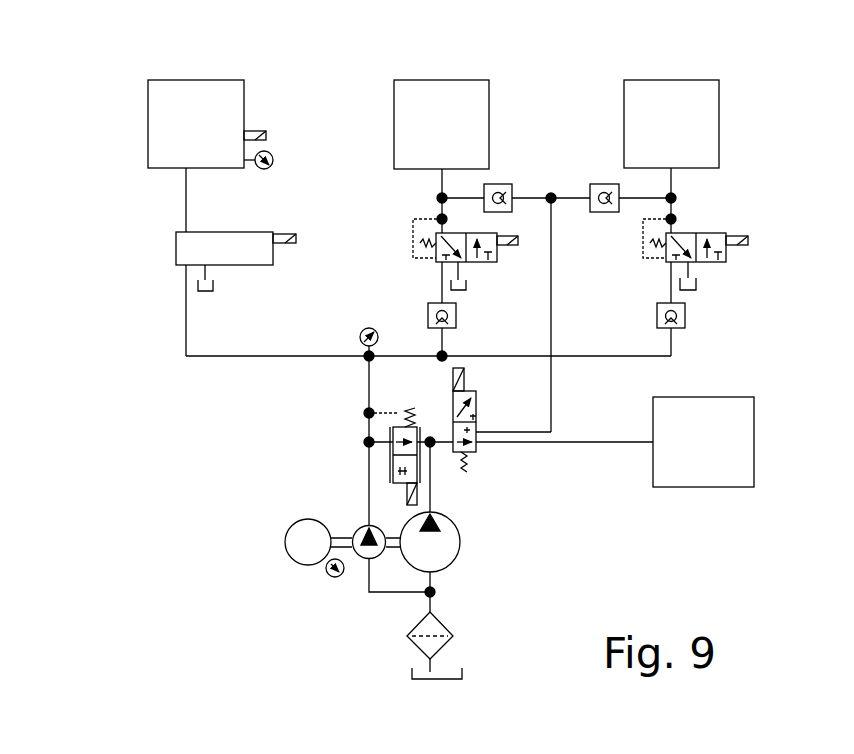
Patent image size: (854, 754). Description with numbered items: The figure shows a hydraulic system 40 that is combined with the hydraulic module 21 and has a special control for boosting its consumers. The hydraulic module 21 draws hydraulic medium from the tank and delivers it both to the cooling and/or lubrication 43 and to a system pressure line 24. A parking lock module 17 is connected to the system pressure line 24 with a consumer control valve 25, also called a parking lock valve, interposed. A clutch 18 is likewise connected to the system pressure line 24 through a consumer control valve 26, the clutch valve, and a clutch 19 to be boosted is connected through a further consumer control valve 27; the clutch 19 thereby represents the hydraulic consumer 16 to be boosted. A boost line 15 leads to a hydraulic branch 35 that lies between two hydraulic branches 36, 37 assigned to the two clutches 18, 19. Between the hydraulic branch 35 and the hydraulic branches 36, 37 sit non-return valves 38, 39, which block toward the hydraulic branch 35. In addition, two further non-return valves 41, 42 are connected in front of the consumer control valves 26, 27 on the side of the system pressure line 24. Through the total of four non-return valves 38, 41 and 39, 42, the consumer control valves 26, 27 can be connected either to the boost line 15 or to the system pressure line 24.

The boost line 15 is at (553, 368).
The hydraulic consumer to be boosted 16 is at (718, 68).
The parking lock module 17 is at (183, 136).
The clutch 18 is at (429, 136).
The clutch to be boosted 19 is at (659, 136).
The hydraulic module 21 is at (240, 546).
The system pressure line 24 is at (254, 357).
The consumer control valve 25 is at (176, 248).
The consumer control valve 26 is at (436, 256).
The consumer control valve 27 is at (718, 262).
The hydraulic branch 35 is at (551, 190).
The hydraulic branch 36 is at (442, 198).
The hydraulic branch 37 is at (671, 198).
The non-return valve 38 is at (497, 184).
The non-return valve 39 is at (597, 184).
The hydraulic system 40 is at (150, 67).
The non-return valve 41 is at (456, 312).
The non-return valve 42 is at (685, 316).
The cooling and/or lubrication 43 is at (690, 454).